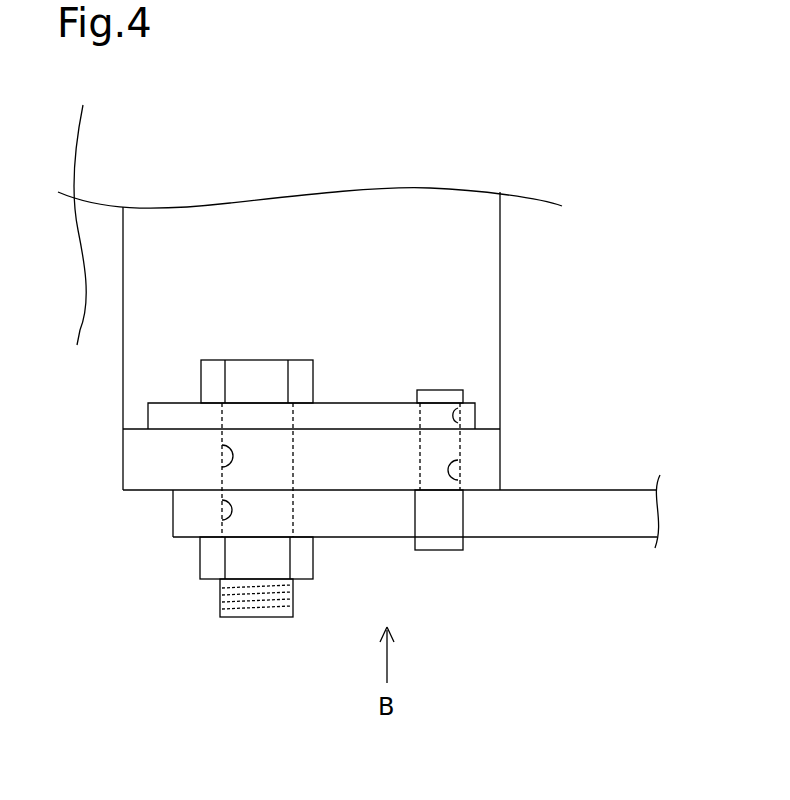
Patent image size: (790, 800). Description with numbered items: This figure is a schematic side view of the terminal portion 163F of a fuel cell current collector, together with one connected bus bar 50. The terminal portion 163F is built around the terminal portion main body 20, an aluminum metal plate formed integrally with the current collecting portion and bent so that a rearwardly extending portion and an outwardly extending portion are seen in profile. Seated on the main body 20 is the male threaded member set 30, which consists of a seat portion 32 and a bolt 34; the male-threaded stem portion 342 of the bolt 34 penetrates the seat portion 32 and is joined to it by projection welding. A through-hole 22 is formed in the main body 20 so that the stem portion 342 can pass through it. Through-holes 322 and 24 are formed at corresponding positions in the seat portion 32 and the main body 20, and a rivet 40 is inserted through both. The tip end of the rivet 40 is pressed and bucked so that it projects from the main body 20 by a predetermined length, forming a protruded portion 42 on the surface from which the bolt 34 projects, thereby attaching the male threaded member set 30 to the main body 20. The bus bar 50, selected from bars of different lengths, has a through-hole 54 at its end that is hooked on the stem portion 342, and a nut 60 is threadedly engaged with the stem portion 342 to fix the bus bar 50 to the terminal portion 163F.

The terminal portion 163F is at (508, 290).
The terminal portion main body 20 is at (488, 443).
The through-hole 22 is at (222, 467).
The through-hole 24 is at (458, 480).
The male threaded member set 30 is at (390, 302).
The seat portion 32 is at (366, 405).
The bolt 34 is at (262, 360).
The through-hole 322 is at (458, 423).
The rivet 40 is at (443, 390).
The protruded portion 42 is at (443, 552).
The bus bar 50 is at (577, 523).
The through-hole 54 is at (222, 520).
The nut 60 is at (305, 563).
The stem portion 342 is at (248, 620).